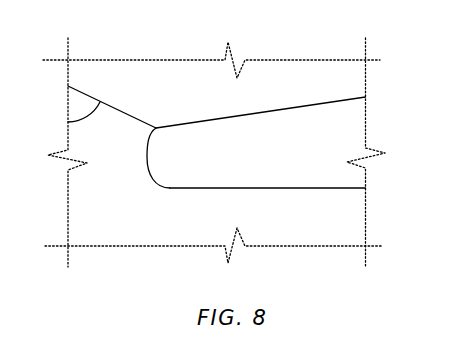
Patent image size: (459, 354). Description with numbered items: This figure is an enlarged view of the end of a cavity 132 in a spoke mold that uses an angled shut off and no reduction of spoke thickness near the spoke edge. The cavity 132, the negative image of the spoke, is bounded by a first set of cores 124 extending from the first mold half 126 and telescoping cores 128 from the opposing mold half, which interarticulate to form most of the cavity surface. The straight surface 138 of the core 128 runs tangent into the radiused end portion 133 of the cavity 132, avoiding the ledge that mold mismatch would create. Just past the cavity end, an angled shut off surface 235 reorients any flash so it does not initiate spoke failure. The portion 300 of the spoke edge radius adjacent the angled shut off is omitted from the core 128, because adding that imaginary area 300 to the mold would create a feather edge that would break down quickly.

The second set of cores 128 is at (320, 75).
The first mold half 126 is at (70, 193).
The first set of cores 124 is at (360, 220).
The straight surface 138 is at (283, 108).
The portion of the edge radius 300 is at (156, 128).
The angled shut off surface 235 is at (68, 122).
The radiused end portion 133 is at (150, 170).
The cavity 132 is at (277, 180).